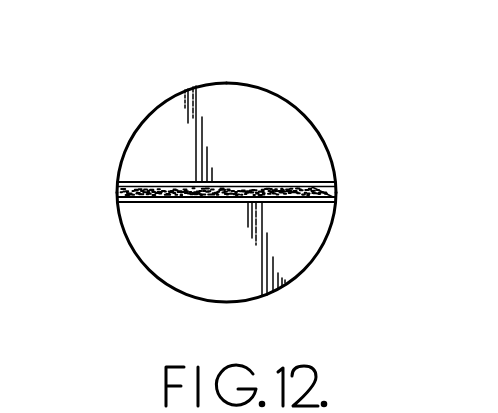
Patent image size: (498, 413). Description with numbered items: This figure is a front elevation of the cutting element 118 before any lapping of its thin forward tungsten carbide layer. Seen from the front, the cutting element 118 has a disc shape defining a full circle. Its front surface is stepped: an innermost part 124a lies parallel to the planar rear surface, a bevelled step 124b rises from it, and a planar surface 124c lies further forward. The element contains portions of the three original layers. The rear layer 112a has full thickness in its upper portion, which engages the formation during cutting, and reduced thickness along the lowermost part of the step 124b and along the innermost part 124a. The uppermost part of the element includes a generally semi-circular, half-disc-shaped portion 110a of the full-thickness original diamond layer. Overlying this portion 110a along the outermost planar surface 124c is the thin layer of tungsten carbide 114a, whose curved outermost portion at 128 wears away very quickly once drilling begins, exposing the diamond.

The cutting element 118 is at (132, 107).
The outermost portion of the tungsten carbide layer along its curve 128 is at (240, 97).
The planar surface 124c is at (290, 132).
The bevelled step 124b is at (140, 206).
The innermost part of the front surface 124a is at (170, 262).
The thin layer of tungsten carbide 114a is at (333, 200).
The half-disc-shaped portion of the diamond layer 110a is at (307, 205).
The rear layer 112a is at (285, 205).